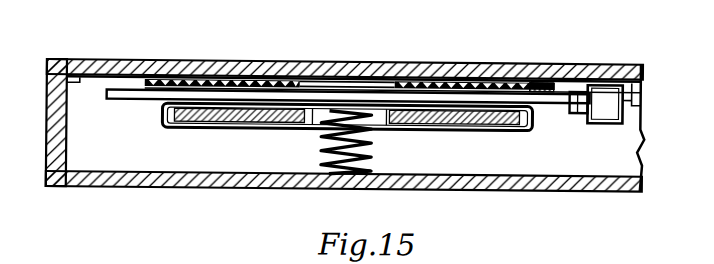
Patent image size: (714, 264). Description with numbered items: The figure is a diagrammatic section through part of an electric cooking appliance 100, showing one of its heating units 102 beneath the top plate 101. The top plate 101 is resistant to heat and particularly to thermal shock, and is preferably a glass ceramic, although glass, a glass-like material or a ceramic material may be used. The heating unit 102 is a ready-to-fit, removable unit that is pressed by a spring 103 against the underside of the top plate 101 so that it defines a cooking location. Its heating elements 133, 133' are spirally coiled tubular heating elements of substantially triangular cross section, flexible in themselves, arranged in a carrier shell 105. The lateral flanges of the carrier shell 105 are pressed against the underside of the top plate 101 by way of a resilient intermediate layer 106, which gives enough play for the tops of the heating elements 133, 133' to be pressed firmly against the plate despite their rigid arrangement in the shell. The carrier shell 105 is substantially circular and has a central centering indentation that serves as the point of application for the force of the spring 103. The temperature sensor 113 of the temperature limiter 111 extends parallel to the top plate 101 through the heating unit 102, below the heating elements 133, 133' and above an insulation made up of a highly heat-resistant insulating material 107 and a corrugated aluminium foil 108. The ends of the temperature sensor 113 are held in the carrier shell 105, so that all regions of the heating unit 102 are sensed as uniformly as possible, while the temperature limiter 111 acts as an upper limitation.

The electric cooking appliance 100 is at (549, 192).
The top plate 101 is at (413, 66).
The heating unit 102 is at (183, 136).
The spring 103 is at (372, 145).
The carrier shell 105 is at (267, 128).
The resilient intermediate layer 106 is at (546, 78).
The insulating material 107 is at (163, 104).
The corrugated aluminium foil 108 is at (485, 124).
The temperature limiter 111 is at (604, 87).
The temperature sensor 113 is at (333, 97).
The heating element 133 is at (405, 48).
The heating element 133' is at (354, 48).